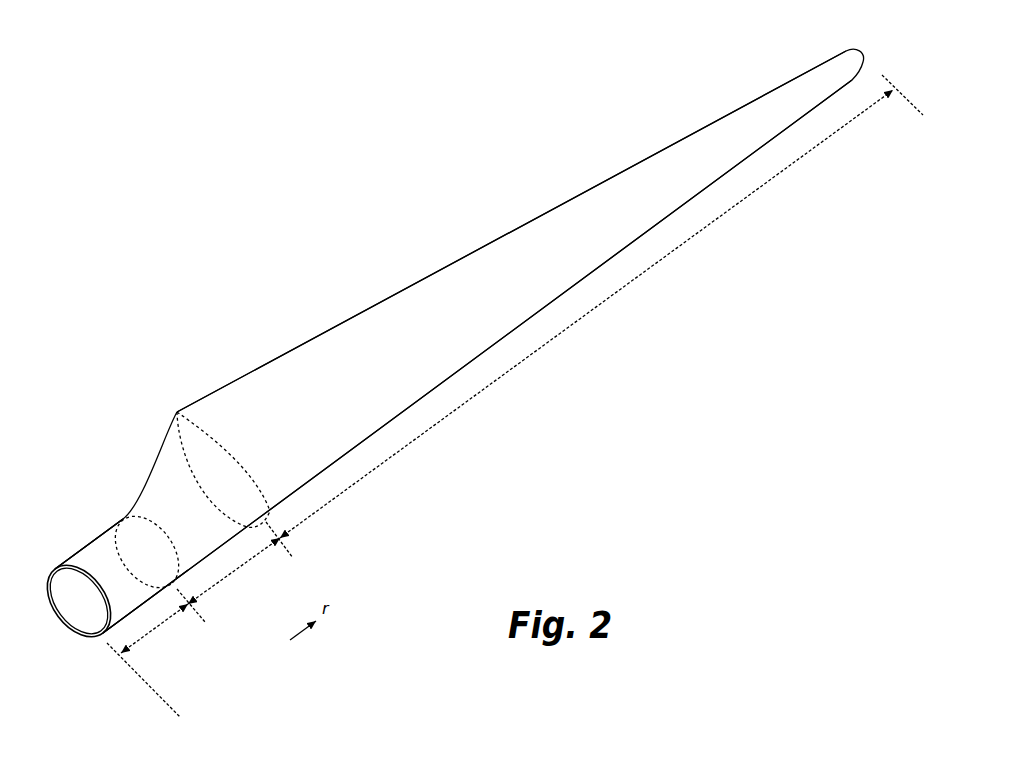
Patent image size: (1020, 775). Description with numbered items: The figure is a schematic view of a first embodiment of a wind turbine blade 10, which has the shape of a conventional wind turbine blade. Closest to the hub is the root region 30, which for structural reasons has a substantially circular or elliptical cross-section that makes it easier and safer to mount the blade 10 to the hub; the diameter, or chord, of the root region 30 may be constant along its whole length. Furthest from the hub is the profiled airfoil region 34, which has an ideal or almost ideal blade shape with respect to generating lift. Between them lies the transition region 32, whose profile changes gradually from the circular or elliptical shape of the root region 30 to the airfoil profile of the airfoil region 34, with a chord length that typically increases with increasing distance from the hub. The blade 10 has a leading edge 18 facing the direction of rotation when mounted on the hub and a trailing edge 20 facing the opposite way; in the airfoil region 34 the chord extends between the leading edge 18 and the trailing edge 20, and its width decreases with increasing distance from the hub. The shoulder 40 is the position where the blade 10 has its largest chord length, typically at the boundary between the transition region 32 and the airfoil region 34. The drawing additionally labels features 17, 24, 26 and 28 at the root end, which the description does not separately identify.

The wind turbine blade 10 is at (310, 232).
The root end 17 is at (70, 592).
The leading edge 18 is at (617, 257).
The trailing edge 20 is at (508, 230).
The root portion 24 is at (75, 557).
The root end face 26 is at (88, 634).
The root region boundary 28 is at (64, 566).
The root region 30 is at (157, 628).
The transition region 32 is at (240, 568).
The airfoil region 34 is at (527, 360).
The shoulder 40 is at (177, 411).